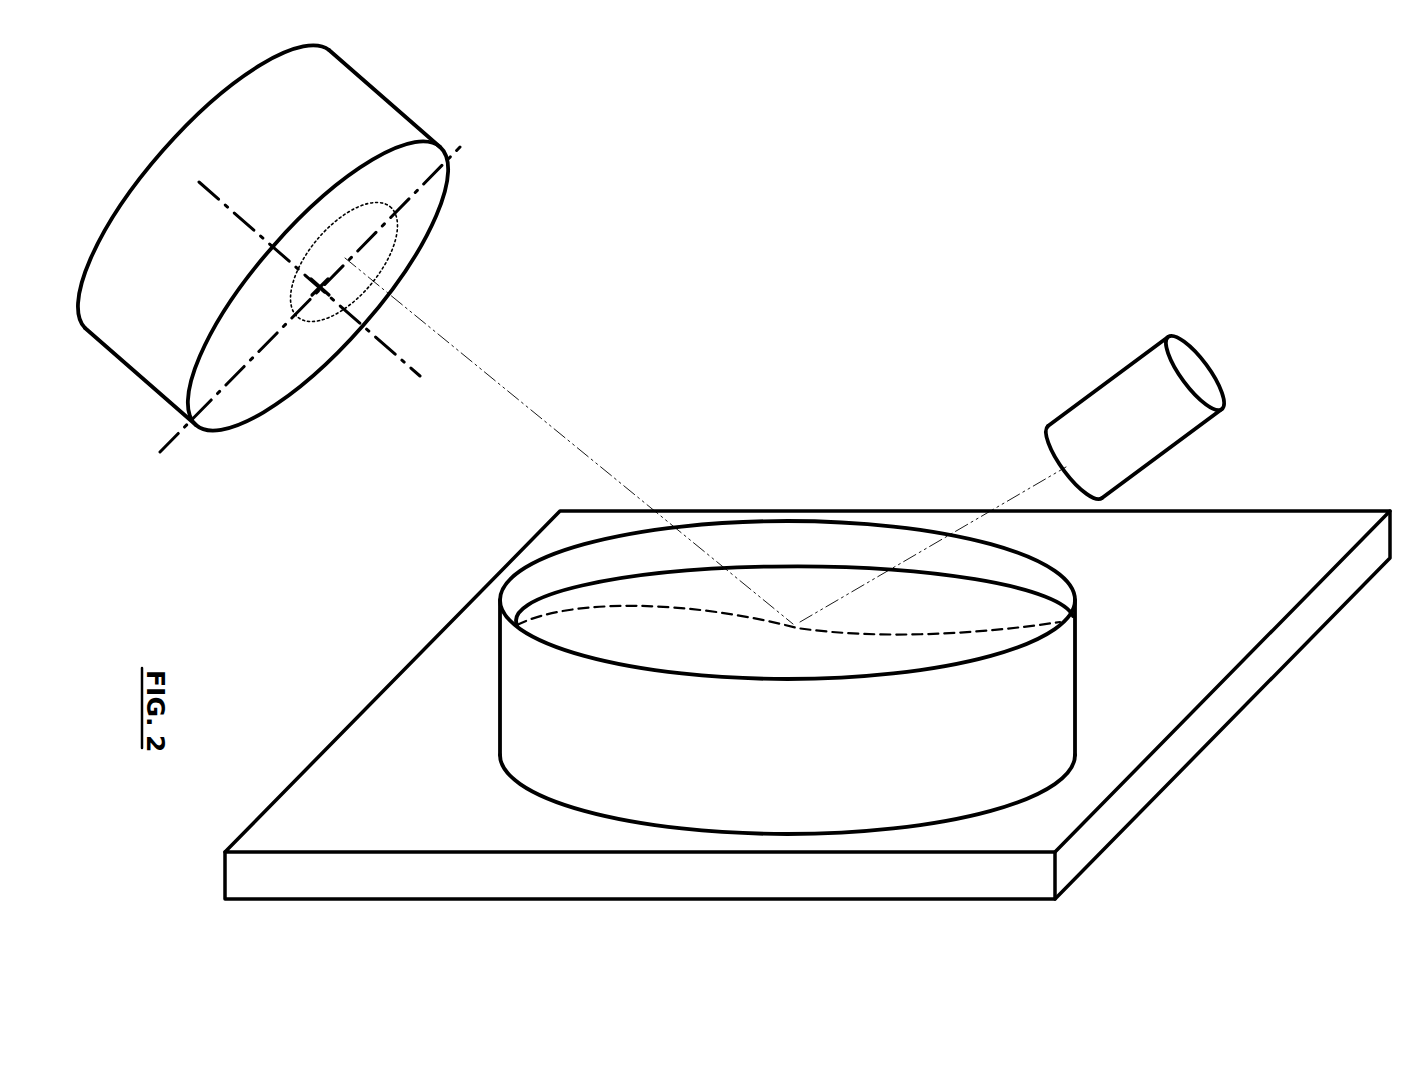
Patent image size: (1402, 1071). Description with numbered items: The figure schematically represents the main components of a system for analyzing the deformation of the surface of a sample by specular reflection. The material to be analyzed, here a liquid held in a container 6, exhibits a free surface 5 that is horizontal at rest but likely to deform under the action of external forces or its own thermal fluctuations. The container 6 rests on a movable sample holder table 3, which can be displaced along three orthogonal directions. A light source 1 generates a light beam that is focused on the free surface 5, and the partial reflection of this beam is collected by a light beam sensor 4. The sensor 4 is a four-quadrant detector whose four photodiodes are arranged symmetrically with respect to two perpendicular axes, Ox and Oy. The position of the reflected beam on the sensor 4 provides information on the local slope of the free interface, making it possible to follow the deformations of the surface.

The light source 1 is at (1193, 432).
The sample holder table 3 is at (1073, 817).
The light beam sensor 4 is at (449, 198).
The free surface 5 is at (1000, 625).
The container 6 is at (1008, 738).